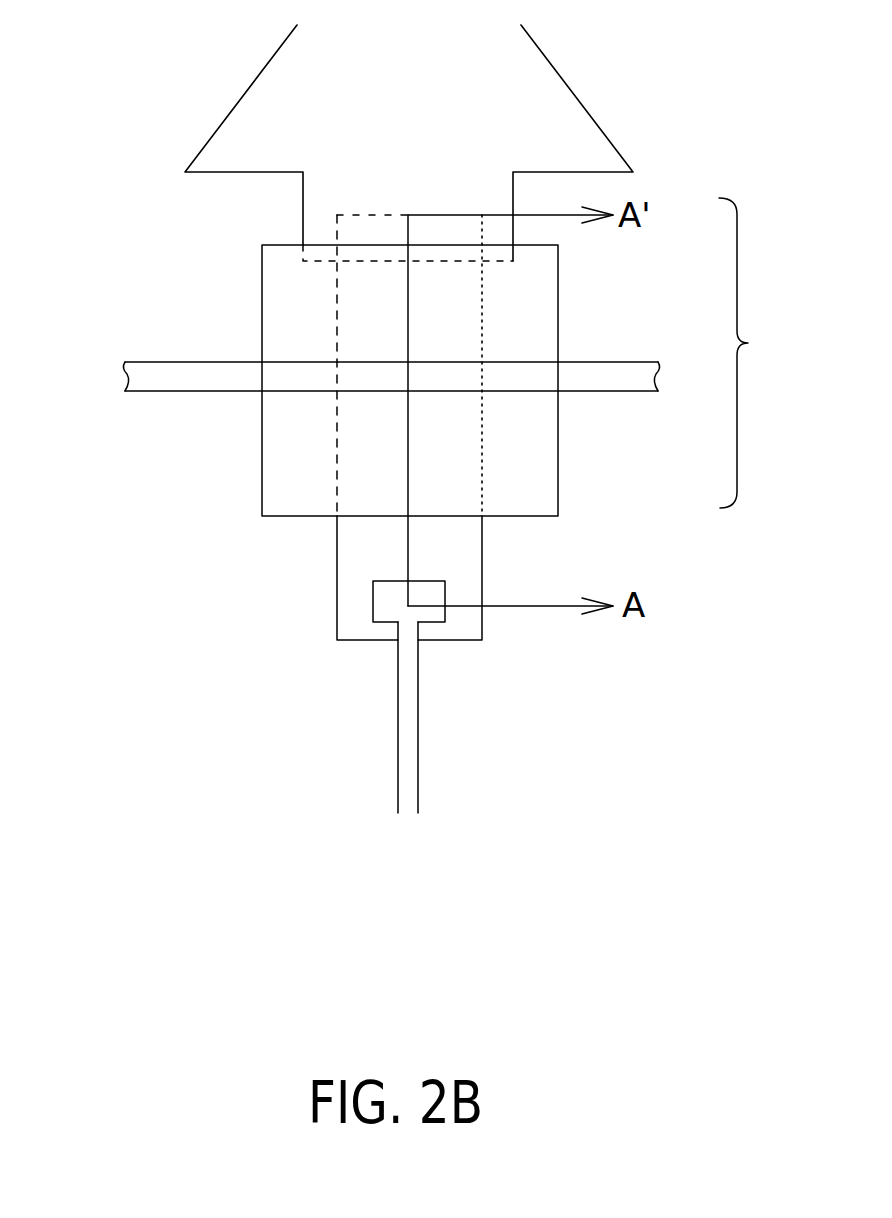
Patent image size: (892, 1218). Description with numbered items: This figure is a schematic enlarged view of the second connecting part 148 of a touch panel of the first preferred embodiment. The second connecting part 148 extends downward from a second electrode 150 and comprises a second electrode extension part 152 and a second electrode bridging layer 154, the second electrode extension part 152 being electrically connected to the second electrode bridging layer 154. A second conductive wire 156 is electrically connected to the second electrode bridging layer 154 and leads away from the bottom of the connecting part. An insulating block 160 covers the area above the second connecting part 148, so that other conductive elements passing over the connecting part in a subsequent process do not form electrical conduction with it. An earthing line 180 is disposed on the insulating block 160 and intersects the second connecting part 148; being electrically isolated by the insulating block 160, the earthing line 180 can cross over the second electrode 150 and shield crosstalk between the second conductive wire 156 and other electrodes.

The second connecting part 148 is at (748, 343).
The second electrode 150 is at (275, 83).
The second electrode extension part 152 is at (497, 202).
The second electrode bridging layer 154 is at (357, 602).
The second conductive wire 156 is at (403, 723).
The insulating block 160 is at (280, 485).
The earthing line 180 is at (160, 375).